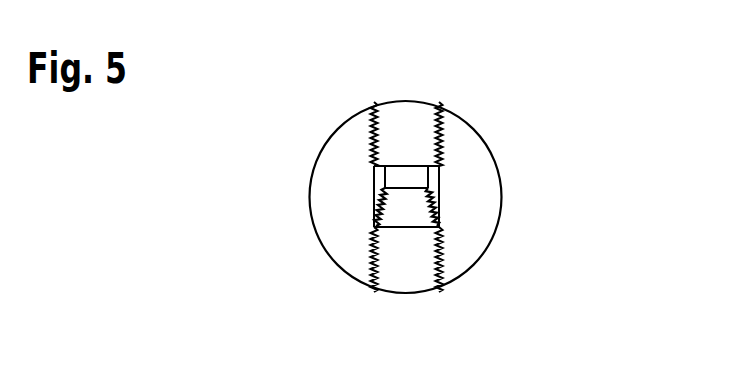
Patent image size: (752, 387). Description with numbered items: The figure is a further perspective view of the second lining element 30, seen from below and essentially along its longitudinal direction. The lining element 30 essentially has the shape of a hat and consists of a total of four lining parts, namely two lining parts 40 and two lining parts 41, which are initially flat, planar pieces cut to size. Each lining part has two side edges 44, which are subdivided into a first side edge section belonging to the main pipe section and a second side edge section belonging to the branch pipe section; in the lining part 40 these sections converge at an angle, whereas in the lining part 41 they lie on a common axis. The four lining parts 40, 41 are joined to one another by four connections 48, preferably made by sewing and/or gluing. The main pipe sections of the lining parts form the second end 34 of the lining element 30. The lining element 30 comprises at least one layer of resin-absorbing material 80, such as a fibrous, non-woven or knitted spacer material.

The lining element 30 is at (572, 137).
The second end 34 is at (499, 129).
The lining part 40 is at (311, 245).
The lining part 41 is at (405, 100).
The side edges 44 is at (374, 142).
The connections 48 is at (374, 100).
The resin-absorbing layer 80 is at (475, 180).